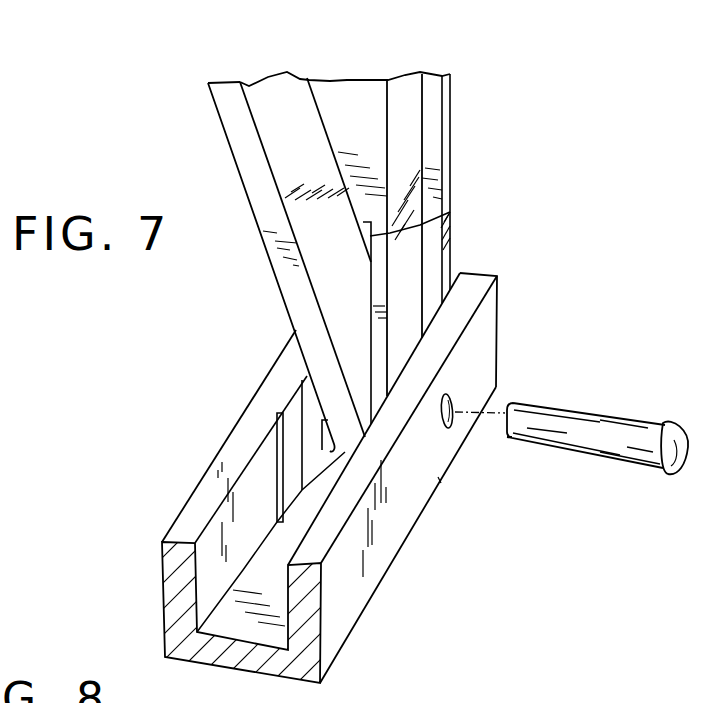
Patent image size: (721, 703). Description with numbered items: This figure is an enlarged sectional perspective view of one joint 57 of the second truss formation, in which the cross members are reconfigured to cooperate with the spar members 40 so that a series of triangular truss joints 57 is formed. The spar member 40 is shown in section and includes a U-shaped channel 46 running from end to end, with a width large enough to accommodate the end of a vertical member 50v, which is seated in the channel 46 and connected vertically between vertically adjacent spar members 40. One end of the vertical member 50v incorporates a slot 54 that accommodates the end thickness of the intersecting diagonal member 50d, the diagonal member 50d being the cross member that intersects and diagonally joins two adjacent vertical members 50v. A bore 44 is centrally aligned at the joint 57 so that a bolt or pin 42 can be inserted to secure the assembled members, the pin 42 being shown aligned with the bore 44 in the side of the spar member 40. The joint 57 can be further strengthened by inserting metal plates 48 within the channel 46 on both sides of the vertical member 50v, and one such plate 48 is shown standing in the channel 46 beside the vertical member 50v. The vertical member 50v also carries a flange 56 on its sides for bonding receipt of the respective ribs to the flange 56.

In FIG. 7, the spar member 40 is at (390, 571).
In FIG. 8, the spar member 40 is at (560, 694).
In FIG. 7, the pin 42 is at (580, 416).
In FIG. 7, the bore 44 is at (451, 397).
In FIG. 7, the U-shaped channel 46 is at (232, 632).
In FIG. 7, the metal plate 48 is at (293, 433).
In FIG. 7, the diagonal member 50d is at (234, 136).
In FIG. 7, the vertical member 50v is at (351, 92).
In FIG. 7, the slot 54 is at (448, 216).
In FIG. 7, the flange 56 is at (452, 104).
In FIG. 7, the truss joint 57 is at (372, 423).